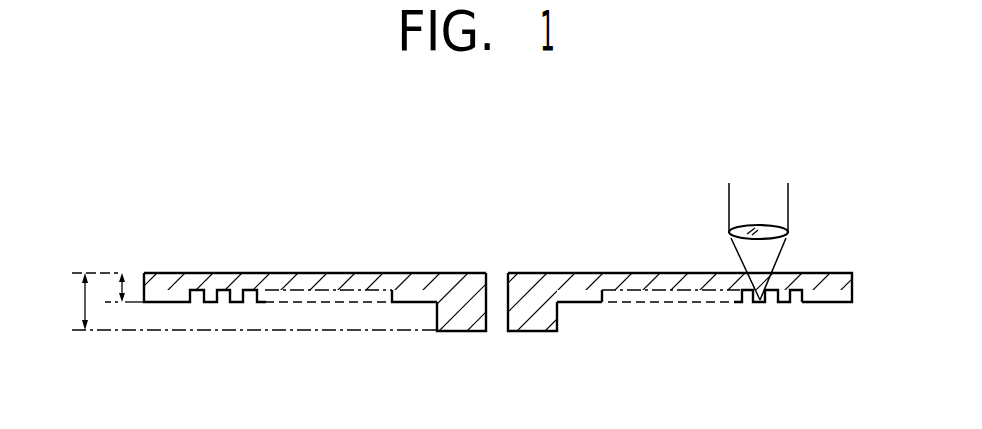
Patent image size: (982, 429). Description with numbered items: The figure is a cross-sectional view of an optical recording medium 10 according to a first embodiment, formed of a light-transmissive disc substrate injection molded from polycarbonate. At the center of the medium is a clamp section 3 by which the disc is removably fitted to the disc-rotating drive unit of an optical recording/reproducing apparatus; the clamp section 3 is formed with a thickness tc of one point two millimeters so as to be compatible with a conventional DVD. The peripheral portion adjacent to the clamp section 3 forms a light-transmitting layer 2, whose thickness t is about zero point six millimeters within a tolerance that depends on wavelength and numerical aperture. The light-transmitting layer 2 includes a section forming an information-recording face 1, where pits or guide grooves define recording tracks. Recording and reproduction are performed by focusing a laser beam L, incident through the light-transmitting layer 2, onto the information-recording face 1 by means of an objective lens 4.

The optical recording medium 10 is at (357, 228).
The information-recording face 1 is at (782, 301).
The light-transmitting layer 2 is at (657, 277).
The clamp section 3 is at (534, 316).
The objective lens 4 is at (768, 224).
The laser beam L is at (790, 200).
The thickness of light-transmitting layer t is at (121, 283).
The thickness of clamp section tc is at (245, 301).